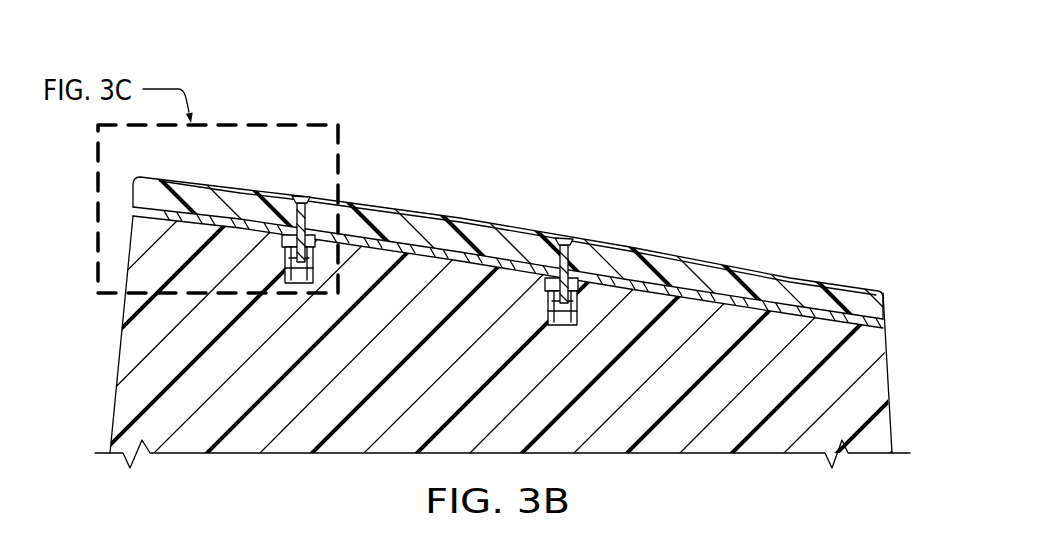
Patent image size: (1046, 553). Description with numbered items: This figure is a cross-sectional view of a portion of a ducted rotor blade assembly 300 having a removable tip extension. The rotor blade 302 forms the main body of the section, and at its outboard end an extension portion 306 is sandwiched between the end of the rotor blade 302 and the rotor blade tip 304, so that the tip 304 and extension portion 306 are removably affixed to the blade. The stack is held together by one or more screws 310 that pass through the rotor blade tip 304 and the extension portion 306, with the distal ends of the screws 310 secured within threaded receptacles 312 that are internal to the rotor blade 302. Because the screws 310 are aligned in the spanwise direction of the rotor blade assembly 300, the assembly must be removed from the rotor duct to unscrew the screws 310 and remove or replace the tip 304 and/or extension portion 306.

The rotor blade assembly 300 is at (523, 241).
The rotor blade 302 is at (878, 387).
The rotor blade tip 304 is at (814, 288).
The extension portion 306 is at (686, 289).
The screws 310 is at (303, 197).
The threaded receptacles 312 is at (300, 284).